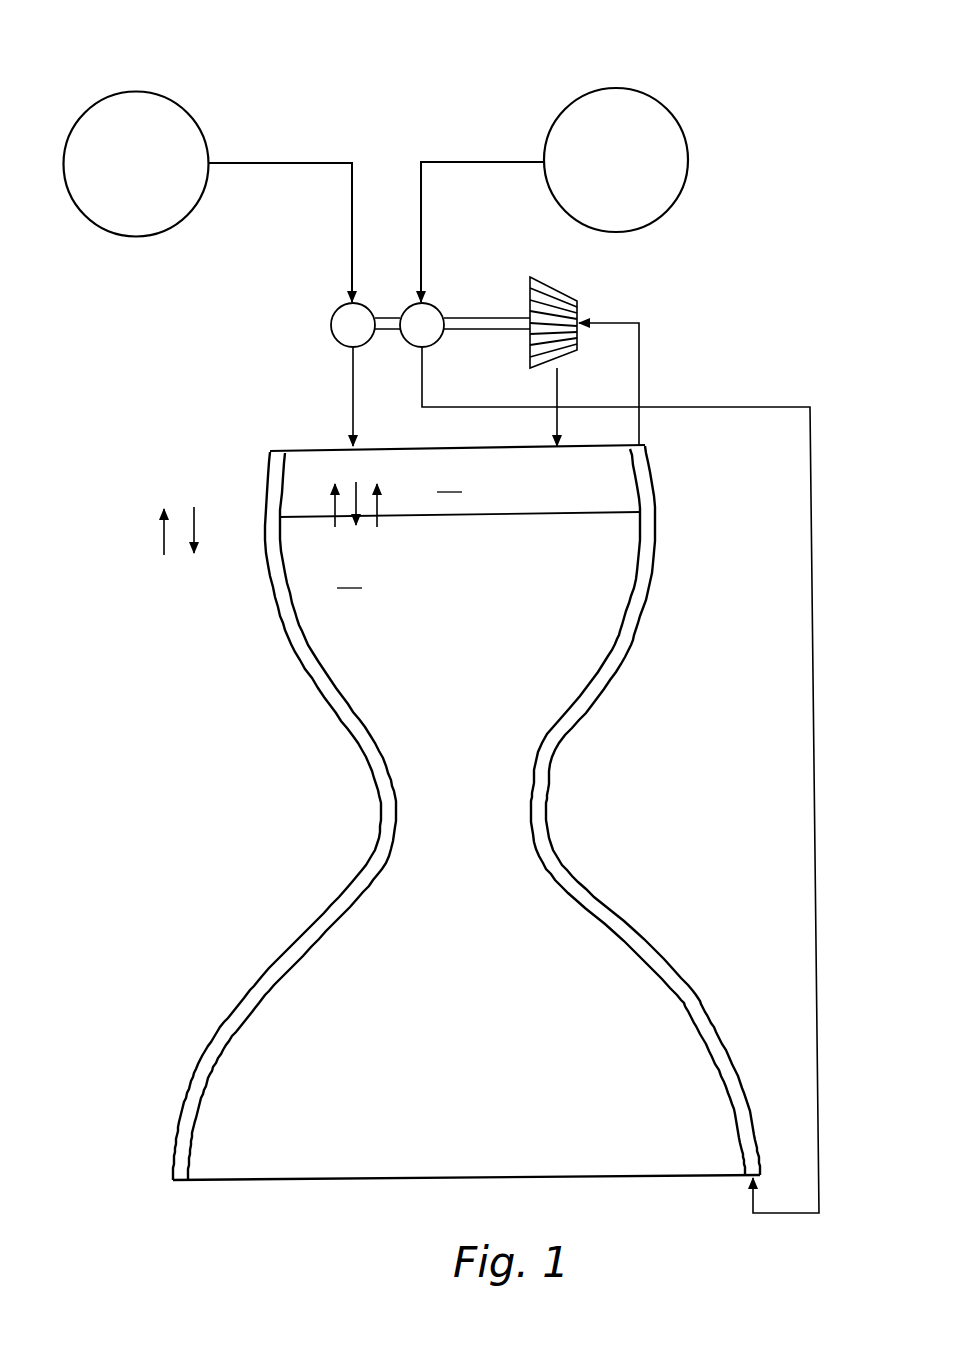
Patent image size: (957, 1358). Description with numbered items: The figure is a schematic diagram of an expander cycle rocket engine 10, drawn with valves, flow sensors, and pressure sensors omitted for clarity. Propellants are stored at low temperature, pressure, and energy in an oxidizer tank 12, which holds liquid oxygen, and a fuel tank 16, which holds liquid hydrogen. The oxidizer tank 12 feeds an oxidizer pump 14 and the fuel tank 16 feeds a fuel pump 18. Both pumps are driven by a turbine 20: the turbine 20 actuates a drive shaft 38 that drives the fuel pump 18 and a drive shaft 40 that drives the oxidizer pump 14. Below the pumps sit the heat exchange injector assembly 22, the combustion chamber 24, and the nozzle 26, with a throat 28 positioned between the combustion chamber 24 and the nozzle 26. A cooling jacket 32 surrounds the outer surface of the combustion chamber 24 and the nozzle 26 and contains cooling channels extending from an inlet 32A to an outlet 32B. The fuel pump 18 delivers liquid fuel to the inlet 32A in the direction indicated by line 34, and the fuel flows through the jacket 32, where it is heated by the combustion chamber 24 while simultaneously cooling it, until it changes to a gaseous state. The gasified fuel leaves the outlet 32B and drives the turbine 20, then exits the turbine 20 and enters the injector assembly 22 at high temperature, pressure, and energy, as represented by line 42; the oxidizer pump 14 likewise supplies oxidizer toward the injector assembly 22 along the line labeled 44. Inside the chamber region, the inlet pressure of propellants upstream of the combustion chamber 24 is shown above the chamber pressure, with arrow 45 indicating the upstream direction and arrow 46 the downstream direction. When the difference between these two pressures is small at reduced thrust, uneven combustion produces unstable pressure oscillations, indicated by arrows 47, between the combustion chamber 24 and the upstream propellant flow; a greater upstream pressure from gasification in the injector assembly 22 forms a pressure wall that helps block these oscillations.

The expander cycle rocket engine 10 is at (506, 102).
The oxidizer tank 12 is at (149, 186).
The oxidizer pump 14 is at (365, 336).
The fuel tank 16 is at (630, 172).
The fuel pump 18 is at (434, 336).
The turbine 20 is at (563, 287).
The heat exchange injector assembly 22 is at (520, 492).
The combustion chamber 24 is at (487, 616).
The nozzle 26 is at (475, 1011).
The throat 28 is at (394, 822).
The cooling jacket 32 is at (538, 814).
The inlet 32A is at (745, 1180).
The outlet 32B is at (650, 450).
The line 34 is at (816, 888).
The drive shaft 38 is at (466, 318).
The drive shaft 40 is at (380, 316).
The line 42 is at (558, 384).
The fuel feed line 44 is at (352, 400).
The arrow 45 is at (160, 538).
The arrow 46 is at (198, 526).
The arrows 47 is at (333, 500).